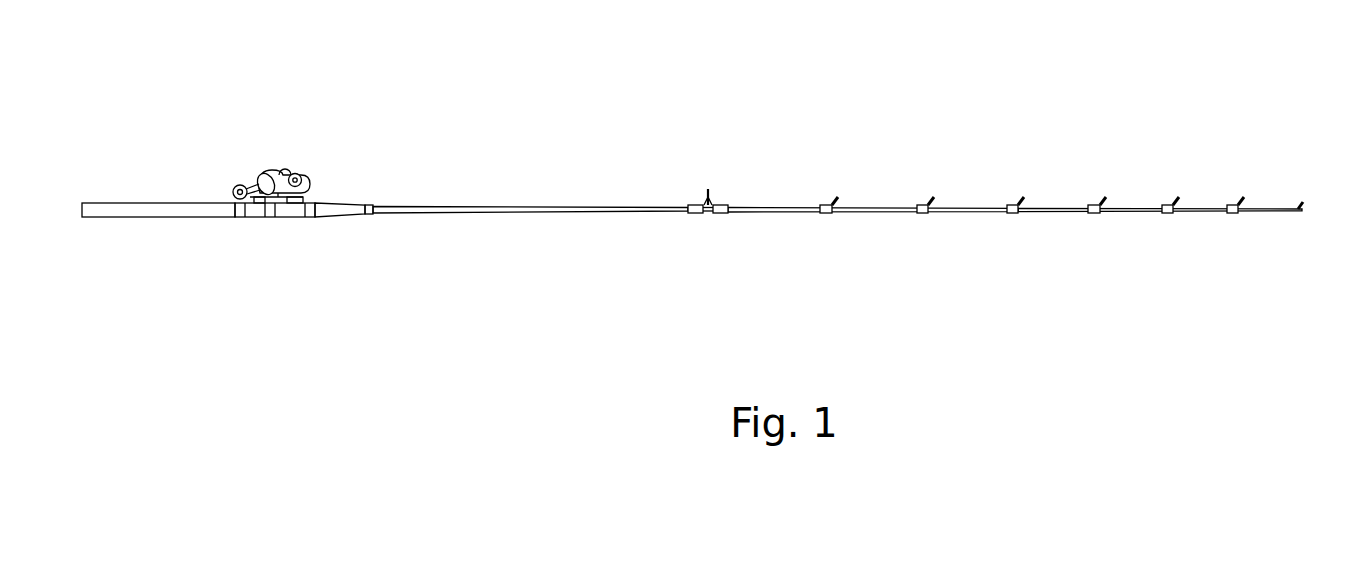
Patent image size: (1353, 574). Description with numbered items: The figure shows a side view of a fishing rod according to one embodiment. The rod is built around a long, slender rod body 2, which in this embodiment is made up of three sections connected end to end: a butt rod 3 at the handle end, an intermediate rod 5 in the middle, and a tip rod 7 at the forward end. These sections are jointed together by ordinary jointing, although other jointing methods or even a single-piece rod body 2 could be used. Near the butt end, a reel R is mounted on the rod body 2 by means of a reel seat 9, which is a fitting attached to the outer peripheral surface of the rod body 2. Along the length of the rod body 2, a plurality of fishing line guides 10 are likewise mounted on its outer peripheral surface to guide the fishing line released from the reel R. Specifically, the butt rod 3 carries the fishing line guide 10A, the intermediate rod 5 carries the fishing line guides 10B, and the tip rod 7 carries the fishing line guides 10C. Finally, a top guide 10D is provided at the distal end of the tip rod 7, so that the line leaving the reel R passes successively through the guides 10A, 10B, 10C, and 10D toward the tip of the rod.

The reel R is at (273, 171).
The reel seat 9 is at (320, 191).
The rod body 2 is at (458, 300).
The butt rod 3 is at (475, 214).
The intermediate rod 5 is at (866, 214).
The tip rod 7 is at (1070, 214).
The fishing line guides 10 is at (692, 88).
The fishing line guide 10A is at (713, 178).
The fishing line guides 10B is at (836, 197).
The fishing line guides 10C is at (1103, 197).
The top guide 10D is at (1300, 202).